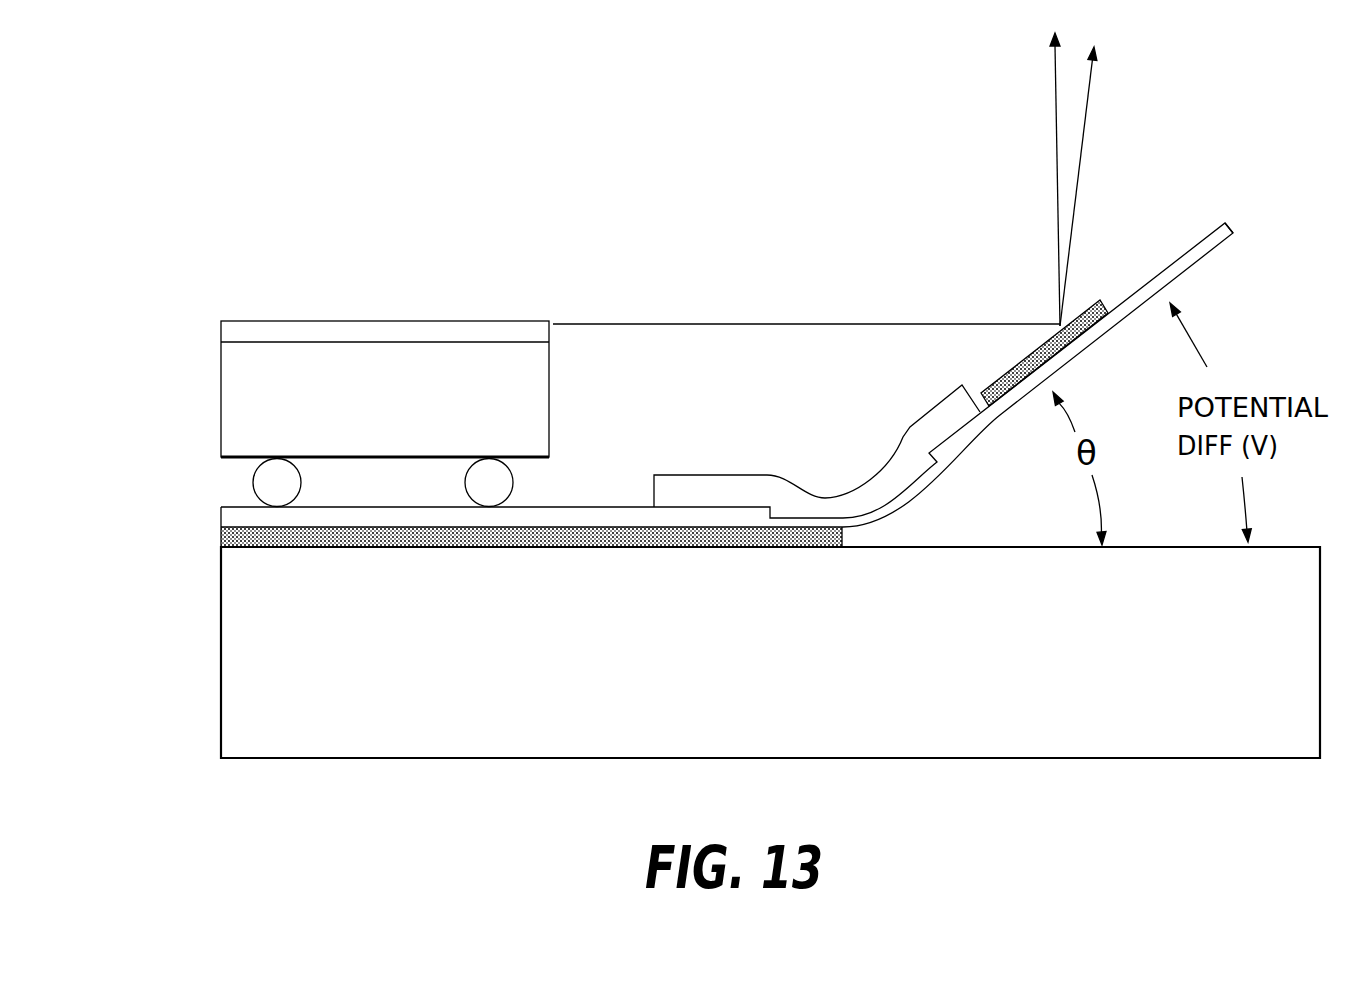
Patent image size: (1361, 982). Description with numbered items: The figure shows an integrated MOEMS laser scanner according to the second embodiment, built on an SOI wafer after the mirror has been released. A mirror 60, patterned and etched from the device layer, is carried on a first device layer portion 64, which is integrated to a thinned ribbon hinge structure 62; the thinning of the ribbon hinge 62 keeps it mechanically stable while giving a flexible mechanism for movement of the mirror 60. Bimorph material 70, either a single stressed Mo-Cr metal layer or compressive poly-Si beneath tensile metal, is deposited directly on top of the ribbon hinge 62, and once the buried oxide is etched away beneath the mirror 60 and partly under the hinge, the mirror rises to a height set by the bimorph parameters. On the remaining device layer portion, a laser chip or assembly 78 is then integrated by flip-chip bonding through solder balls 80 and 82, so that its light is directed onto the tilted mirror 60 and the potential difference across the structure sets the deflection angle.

The mirror 60 is at (1003, 373).
The ribbon hinge structure 62 is at (880, 500).
The first device layer portion 64 is at (1224, 204).
The bimorph material 70 is at (903, 437).
The laser chip or assembly 78 is at (226, 381).
The solder ball 80 is at (257, 489).
The solder ball 82 is at (512, 481).